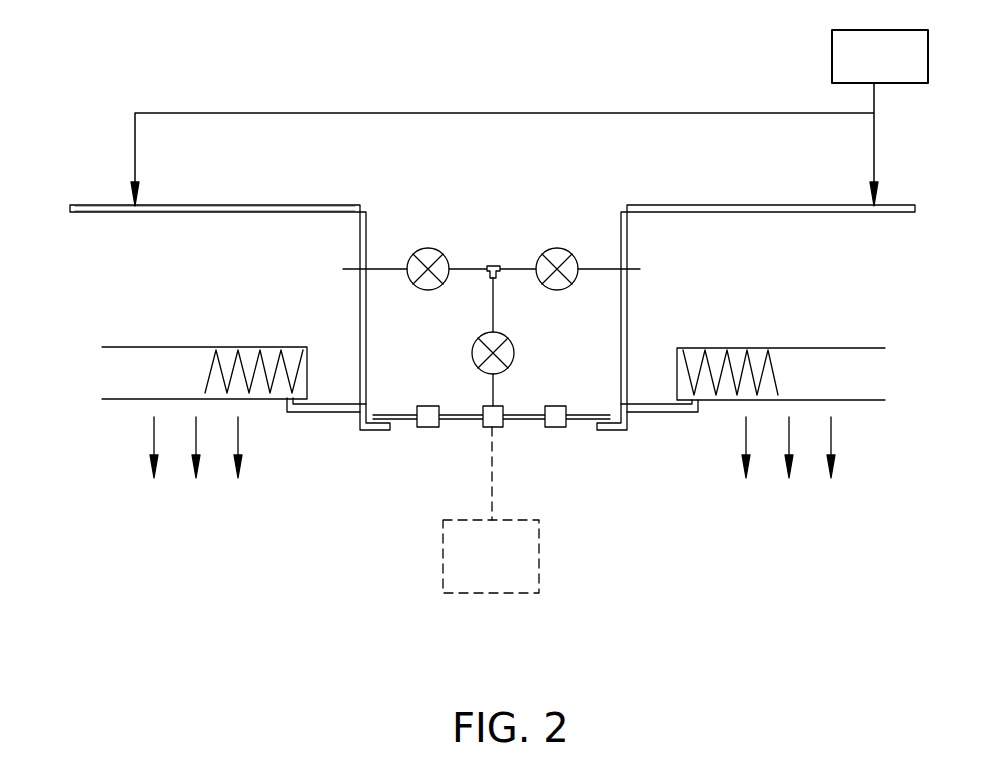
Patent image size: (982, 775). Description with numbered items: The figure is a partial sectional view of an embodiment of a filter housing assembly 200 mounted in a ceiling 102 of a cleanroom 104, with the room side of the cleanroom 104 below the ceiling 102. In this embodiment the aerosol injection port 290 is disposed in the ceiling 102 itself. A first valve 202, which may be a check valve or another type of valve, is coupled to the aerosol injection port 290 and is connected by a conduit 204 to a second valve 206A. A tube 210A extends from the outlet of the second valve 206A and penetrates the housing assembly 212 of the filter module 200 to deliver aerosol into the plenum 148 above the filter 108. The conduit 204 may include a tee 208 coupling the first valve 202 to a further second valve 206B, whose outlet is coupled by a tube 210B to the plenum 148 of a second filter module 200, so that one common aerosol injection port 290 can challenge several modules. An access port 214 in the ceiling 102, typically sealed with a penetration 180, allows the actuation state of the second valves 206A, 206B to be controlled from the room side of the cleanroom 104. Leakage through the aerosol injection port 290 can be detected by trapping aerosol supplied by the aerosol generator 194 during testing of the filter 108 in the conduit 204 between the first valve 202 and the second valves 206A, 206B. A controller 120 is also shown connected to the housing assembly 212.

The controller 120 is at (529, 118).
The filter housing assembly 200 is at (264, 200).
The housing assembly 212 is at (199, 205).
The plenum 148 is at (222, 304).
The filter 108 is at (133, 347).
The tube 210A is at (390, 268).
The tube 210B is at (640, 268).
The second valve 206A is at (429, 248).
The second valve 206B is at (557, 248).
The tee 208 is at (493, 264).
The conduit 204 is at (495, 312).
The first valve 202 is at (472, 353).
The ceiling 102 is at (596, 413).
The penetration 180 is at (428, 428).
The access port 214 is at (445, 429).
The aerosol injection port 290 is at (487, 431).
The aerosol generator 194 is at (512, 567).
The cleanroom 104 is at (634, 572).